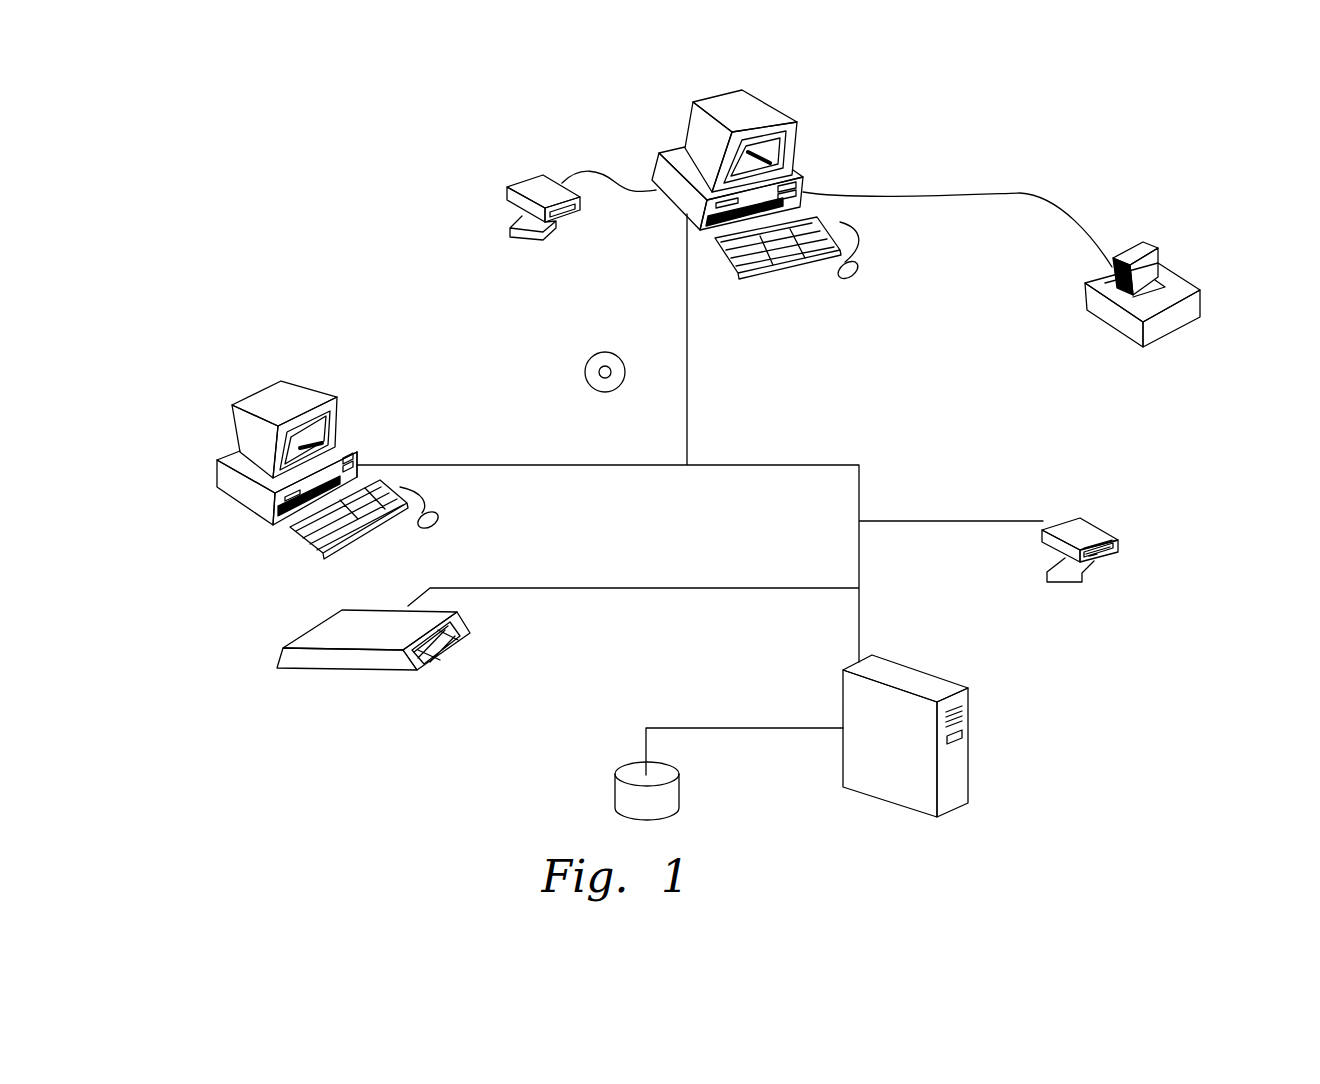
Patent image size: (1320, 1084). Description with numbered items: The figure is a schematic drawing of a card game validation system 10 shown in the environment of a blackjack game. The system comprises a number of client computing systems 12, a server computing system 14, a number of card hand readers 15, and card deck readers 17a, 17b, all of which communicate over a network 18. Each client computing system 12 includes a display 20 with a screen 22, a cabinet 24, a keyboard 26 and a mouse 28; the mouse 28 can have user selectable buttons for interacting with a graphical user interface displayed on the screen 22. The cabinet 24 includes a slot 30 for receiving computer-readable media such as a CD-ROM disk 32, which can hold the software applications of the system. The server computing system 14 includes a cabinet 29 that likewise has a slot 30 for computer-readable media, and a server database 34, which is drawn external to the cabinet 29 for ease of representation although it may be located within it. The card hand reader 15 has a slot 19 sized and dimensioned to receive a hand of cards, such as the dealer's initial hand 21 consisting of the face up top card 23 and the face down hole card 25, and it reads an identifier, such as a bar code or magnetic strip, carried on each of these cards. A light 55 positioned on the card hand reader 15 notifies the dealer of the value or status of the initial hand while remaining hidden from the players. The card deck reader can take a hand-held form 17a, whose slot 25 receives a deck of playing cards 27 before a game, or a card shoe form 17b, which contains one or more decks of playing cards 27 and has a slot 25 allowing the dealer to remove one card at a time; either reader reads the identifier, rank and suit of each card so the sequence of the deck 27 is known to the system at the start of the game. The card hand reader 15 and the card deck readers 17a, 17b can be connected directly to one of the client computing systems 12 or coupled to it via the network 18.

The card game validation system 10 is at (1056, 185).
The client computing system 12 is at (657, 325).
The server computing system 14 is at (974, 755).
The card hand reader 15 is at (840, 386).
The hand-held card deck reader 17a is at (1185, 285).
The shoe card deck reader 17b is at (334, 662).
The network 18 is at (859, 557).
The slot 19 is at (571, 212).
The display 20 is at (348, 466).
The dealer's initial hand 21 is at (1130, 563).
The screen 22 is at (328, 437).
The face up top card 23 is at (1107, 563).
The cabinet 24 is at (237, 508).
The slot 25 is at (1098, 295).
The keyboard 26 is at (360, 530).
The deck of playing cards 27 is at (1155, 262).
The mouse 28 is at (445, 518).
The cabinet 29 is at (950, 805).
The slot 30 is at (362, 458).
The CD-ROM disk 32 is at (613, 353).
The server database 34 is at (682, 787).
The light 55 is at (556, 230).